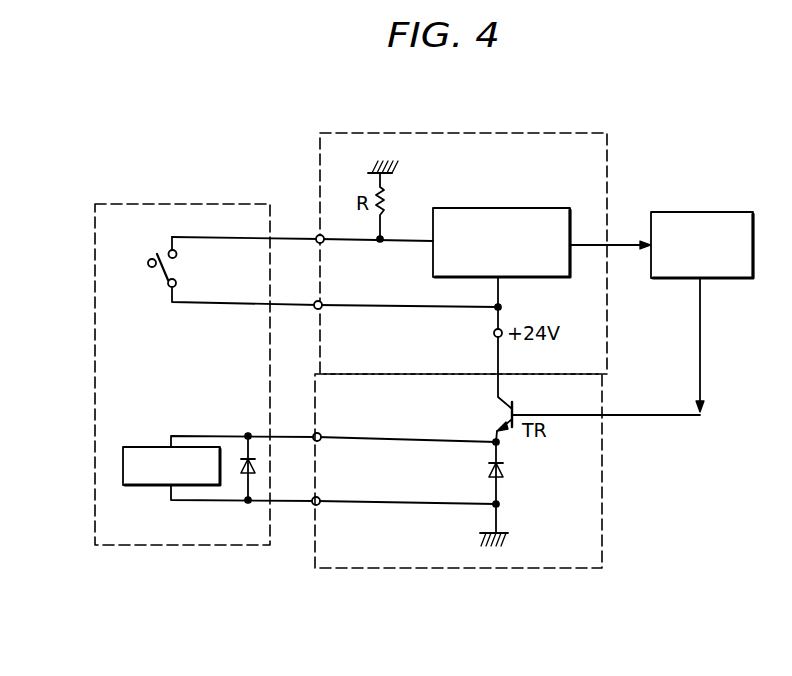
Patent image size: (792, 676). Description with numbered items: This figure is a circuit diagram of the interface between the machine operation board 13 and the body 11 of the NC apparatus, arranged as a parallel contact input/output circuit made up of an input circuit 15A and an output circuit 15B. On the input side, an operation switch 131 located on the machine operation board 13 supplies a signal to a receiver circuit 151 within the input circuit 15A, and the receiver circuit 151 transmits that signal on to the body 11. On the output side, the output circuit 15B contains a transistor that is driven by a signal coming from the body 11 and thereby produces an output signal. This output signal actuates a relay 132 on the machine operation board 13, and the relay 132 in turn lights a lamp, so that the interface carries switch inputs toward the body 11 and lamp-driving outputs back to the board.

The body 11 is at (718, 212).
The machine operation board 13 is at (219, 204).
The operation switch 131 is at (158, 277).
The relay 132 is at (133, 447).
The input circuit 15A is at (555, 133).
The receiver circuit 151 is at (500, 208).
The output circuit 15B is at (535, 568).